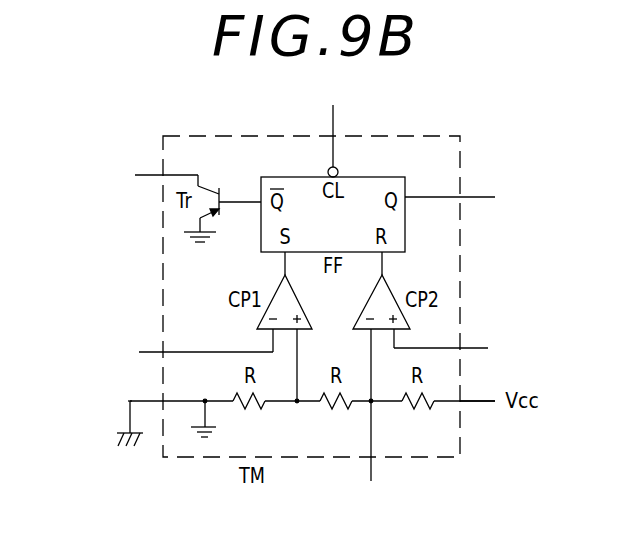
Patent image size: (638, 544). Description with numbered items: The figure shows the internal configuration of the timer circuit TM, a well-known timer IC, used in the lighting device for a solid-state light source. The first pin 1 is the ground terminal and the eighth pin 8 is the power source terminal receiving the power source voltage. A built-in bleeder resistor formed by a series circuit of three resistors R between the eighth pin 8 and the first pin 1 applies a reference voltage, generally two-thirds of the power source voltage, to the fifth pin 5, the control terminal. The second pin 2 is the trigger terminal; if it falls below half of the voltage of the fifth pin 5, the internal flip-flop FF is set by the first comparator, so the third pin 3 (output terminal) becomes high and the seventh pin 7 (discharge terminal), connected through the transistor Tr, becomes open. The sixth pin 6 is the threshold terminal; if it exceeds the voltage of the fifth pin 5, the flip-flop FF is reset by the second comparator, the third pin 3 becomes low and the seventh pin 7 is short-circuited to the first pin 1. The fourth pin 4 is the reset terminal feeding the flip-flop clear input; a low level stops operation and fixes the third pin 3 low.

The first pin 1 is at (122, 400).
The second pin 2 is at (197, 351).
The third pin 3 is at (459, 198).
The fourth pin 4 is at (333, 123).
The fifth pin 5 is at (371, 417).
The sixth pin 6 is at (450, 349).
The seventh pin 7 is at (157, 176).
The eighth pin 8 is at (477, 416).